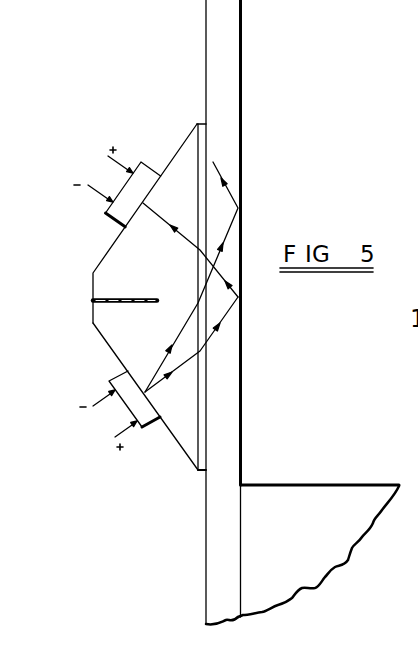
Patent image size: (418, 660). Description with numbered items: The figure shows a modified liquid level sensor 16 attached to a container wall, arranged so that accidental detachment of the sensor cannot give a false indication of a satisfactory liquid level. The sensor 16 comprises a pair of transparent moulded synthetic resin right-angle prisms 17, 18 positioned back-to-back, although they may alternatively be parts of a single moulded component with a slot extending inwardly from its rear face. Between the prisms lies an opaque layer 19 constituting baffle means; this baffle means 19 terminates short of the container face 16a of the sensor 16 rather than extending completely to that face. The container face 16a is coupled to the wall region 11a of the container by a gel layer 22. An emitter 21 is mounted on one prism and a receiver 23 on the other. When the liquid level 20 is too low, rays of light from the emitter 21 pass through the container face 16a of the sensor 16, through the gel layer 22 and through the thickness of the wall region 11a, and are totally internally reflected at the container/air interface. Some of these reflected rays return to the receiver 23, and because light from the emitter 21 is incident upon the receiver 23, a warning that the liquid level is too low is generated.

The wall region 11a is at (228, 47).
The sensor 16 is at (88, 251).
The container face 16a is at (198, 394).
The right-angle prism 17 is at (108, 336).
The right-angle prism 18 is at (102, 283).
The opaque layer 19 is at (93, 300).
The liquid level 20 is at (351, 483).
The emitter 21 is at (132, 399).
The gel layer 22 is at (202, 446).
The receiver 23 is at (128, 198).